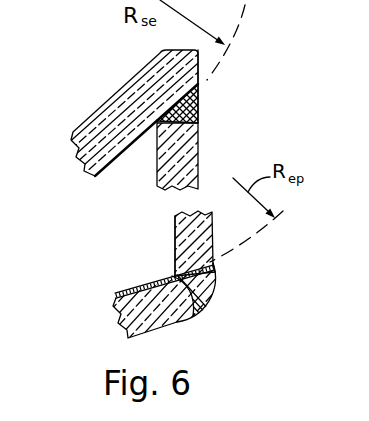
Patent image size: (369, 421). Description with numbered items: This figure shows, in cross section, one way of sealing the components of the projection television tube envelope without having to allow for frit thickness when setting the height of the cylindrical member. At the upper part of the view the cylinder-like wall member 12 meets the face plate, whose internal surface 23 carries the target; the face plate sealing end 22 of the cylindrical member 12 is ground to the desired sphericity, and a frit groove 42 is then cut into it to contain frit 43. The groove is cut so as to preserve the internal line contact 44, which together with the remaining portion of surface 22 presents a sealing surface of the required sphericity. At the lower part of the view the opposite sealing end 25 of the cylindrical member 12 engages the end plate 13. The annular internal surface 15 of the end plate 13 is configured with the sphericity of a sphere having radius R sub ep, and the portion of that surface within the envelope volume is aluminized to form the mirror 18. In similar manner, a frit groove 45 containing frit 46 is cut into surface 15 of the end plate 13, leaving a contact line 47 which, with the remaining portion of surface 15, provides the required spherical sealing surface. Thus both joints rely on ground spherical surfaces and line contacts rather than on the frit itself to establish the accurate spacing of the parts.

The cylinder-like wall member 12 is at (204, 231).
The end plate 13 is at (122, 318).
The annular internal surface 15 is at (216, 271).
The mirror 18 is at (142, 286).
The face plate sealing end 22 is at (198, 89).
The internal surface of face plate 23 is at (107, 170).
The sealing end 25 is at (188, 243).
The frit groove 42 is at (180, 135).
The frit 43 is at (181, 113).
The internal line contact 44 is at (159, 122).
The frit groove 45 is at (207, 308).
The frit 46 is at (215, 272).
The contact line 47 is at (182, 312).